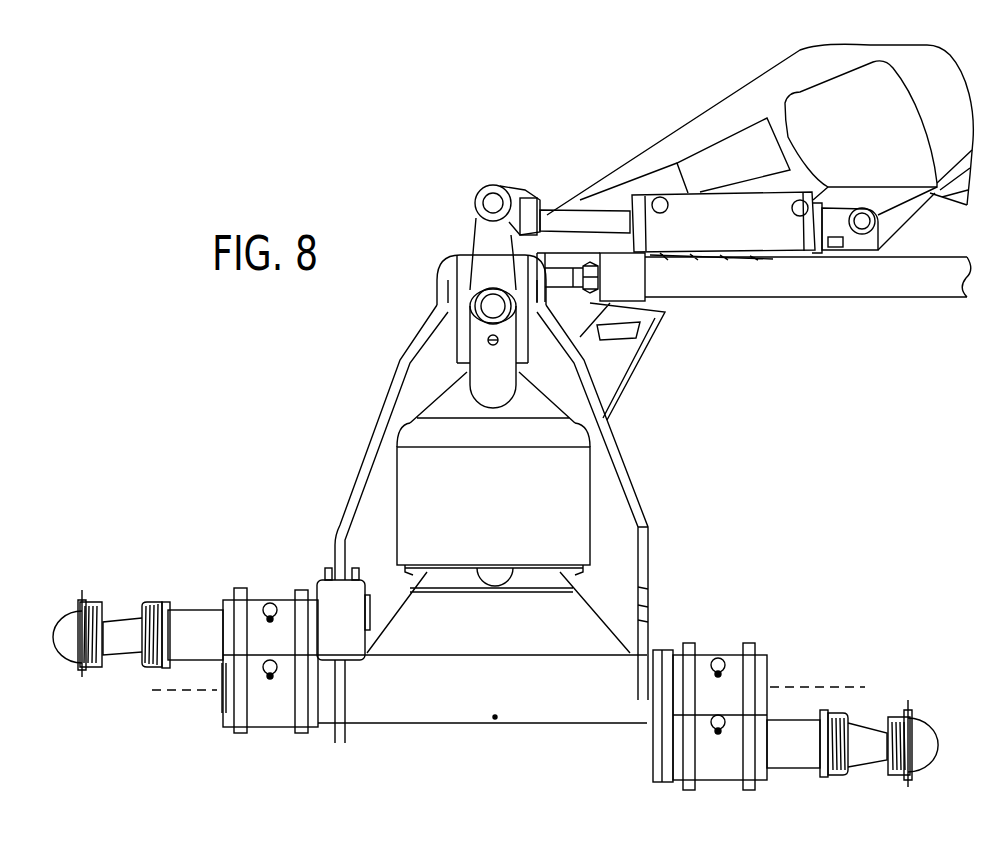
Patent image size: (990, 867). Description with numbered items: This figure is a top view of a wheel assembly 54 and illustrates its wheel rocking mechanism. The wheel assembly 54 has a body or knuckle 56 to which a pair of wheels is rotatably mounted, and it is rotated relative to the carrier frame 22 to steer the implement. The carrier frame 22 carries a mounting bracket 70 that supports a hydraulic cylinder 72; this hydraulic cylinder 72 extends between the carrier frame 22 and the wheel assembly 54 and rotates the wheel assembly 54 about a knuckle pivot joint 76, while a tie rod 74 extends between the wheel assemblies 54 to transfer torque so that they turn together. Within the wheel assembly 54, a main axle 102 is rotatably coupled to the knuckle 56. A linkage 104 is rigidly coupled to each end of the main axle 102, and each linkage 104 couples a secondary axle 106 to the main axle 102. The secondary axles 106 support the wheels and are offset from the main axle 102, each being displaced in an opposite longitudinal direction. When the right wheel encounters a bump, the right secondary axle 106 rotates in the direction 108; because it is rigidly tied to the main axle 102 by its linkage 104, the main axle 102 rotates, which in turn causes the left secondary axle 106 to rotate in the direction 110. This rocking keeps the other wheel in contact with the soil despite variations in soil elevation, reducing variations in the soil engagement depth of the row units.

The carrier frame 22 is at (750, 103).
The mounting bracket 70 is at (868, 142).
The hydraulic cylinder 72 is at (678, 205).
The tie rod 74 is at (845, 277).
The knuckle pivot joint 76 is at (488, 302).
The wheel assembly 54 is at (352, 390).
The knuckle 56 is at (633, 500).
The main axle 102 is at (447, 712).
The linkage 104 is at (240, 727).
The secondary axle 106 is at (197, 607).
The direction 108 is at (820, 663).
The direction 110 is at (195, 666).